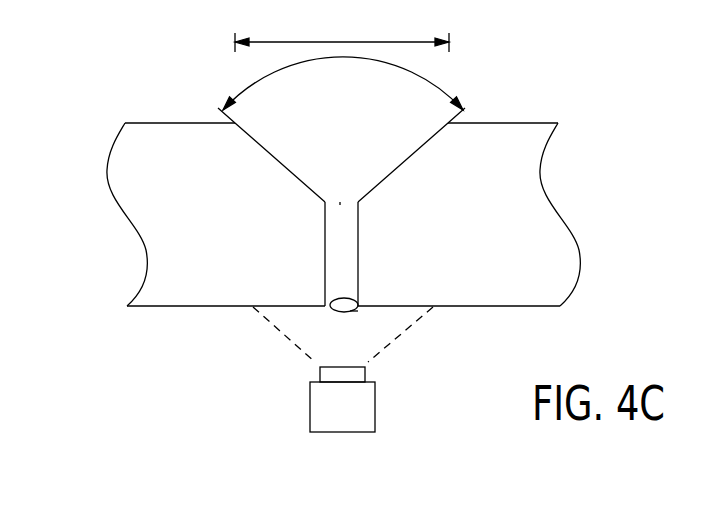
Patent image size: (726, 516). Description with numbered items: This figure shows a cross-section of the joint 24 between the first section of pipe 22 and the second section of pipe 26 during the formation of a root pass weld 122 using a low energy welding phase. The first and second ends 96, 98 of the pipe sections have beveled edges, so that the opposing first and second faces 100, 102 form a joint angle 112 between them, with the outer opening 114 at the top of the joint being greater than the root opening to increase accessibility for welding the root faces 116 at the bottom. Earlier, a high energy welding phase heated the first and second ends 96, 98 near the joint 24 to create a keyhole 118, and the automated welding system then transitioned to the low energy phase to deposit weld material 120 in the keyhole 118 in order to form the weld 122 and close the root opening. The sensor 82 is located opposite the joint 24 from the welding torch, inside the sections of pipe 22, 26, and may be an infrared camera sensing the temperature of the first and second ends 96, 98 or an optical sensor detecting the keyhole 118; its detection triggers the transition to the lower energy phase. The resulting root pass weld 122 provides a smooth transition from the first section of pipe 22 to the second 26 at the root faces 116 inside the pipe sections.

The first section of pipe 22 is at (180, 122).
The joint 24 is at (348, 185).
The second section of pipe 26 is at (503, 122).
The sensor 82 is at (375, 407).
The first end 96 is at (210, 223).
The second end 98 is at (498, 245).
The first face 100 is at (325, 253).
The second face 102 is at (358, 252).
The joint angle 112 is at (343, 42).
The outer opening 114 is at (343, 42).
The root faces 116 is at (155, 307).
The keyhole 118 is at (357, 312).
The weld material 120 is at (340, 308).
The root pass weld 122 is at (340, 202).